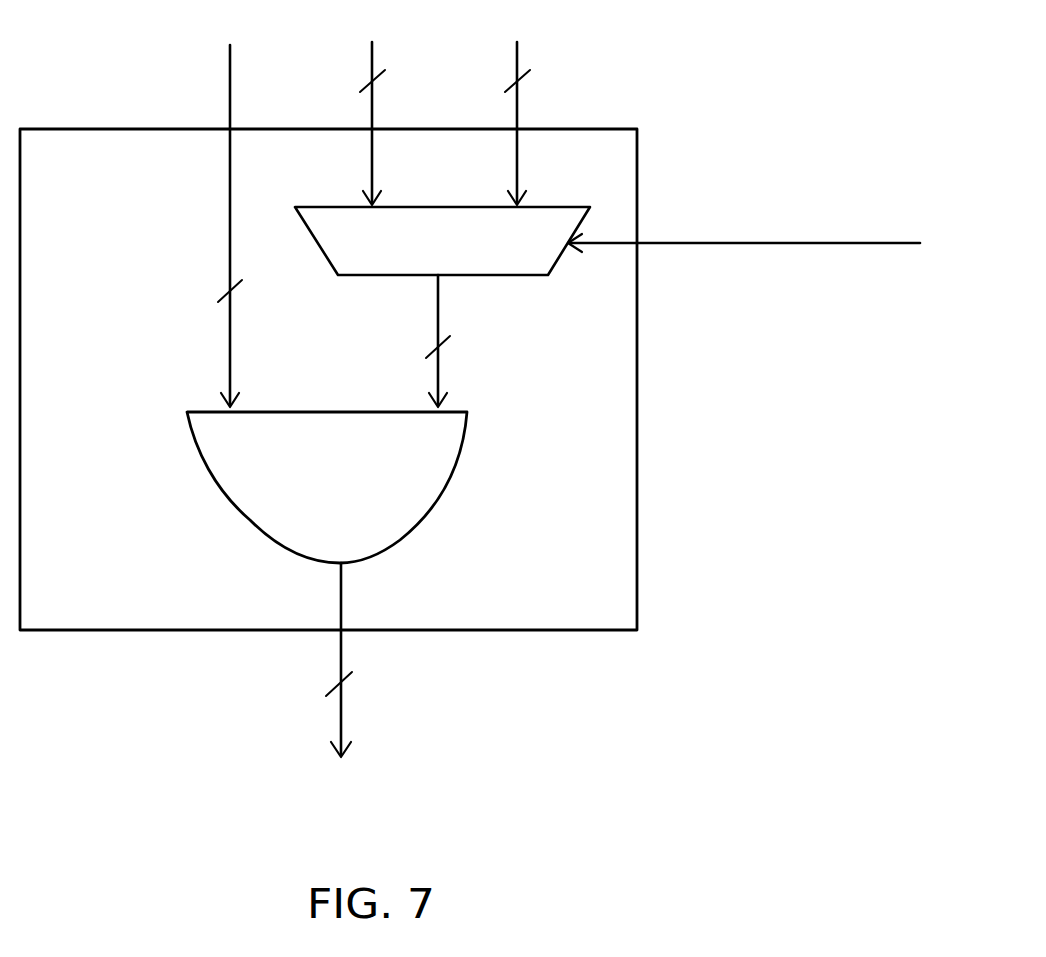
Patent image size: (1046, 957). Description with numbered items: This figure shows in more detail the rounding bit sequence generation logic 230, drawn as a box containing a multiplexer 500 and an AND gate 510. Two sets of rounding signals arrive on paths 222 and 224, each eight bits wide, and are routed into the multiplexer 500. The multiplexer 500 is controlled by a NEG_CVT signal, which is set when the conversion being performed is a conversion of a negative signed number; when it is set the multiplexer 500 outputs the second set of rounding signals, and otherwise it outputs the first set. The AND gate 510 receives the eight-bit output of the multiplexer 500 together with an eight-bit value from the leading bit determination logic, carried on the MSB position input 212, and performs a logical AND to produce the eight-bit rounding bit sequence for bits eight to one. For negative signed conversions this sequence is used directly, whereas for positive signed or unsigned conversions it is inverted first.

The rounding bit sequence generation logic 230 is at (103, 128).
The MSB position signal 212 is at (228, 66).
The path 222 is at (370, 66).
The path 224 is at (520, 60).
The multiplexer 500 is at (533, 283).
The AND gate 510 is at (452, 480).